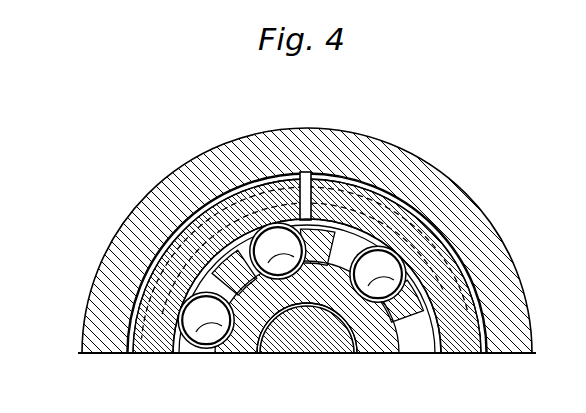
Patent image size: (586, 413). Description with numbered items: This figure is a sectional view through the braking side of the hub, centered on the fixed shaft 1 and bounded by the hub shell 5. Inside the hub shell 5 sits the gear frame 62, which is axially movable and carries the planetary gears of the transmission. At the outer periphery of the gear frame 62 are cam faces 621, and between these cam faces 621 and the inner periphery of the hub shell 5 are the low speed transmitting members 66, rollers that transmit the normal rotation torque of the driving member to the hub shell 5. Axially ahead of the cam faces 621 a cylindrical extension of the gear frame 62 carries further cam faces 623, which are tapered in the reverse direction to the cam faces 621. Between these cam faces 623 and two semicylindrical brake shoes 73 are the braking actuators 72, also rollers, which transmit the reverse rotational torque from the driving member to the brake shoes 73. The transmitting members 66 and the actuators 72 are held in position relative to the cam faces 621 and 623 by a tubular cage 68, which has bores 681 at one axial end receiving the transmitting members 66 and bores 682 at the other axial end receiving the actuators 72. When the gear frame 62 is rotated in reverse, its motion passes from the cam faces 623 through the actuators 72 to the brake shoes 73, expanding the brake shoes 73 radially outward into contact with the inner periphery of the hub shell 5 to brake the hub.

The fixed shaft 1 is at (327, 343).
The hub shell 5 is at (430, 172).
The gear frame 62 is at (270, 332).
The cam faces 621 is at (220, 280).
The cam faces 623 is at (230, 342).
The low speed transmitting members 66 is at (226, 192).
The tubular cage 68 is at (196, 285).
The bores 681 is at (205, 200).
The bores 682 is at (138, 262).
The braking actuators 72 is at (398, 275).
The brake shoes 73 is at (283, 172).